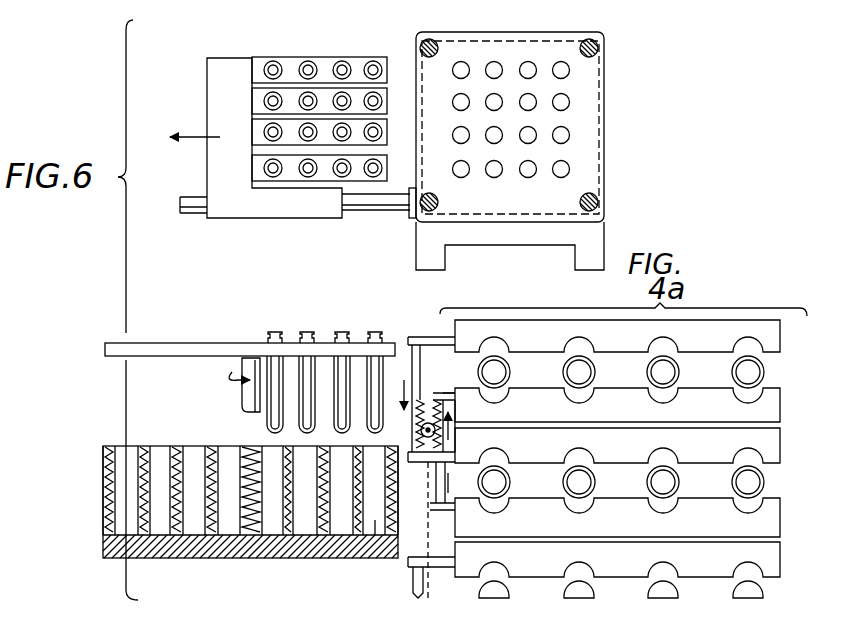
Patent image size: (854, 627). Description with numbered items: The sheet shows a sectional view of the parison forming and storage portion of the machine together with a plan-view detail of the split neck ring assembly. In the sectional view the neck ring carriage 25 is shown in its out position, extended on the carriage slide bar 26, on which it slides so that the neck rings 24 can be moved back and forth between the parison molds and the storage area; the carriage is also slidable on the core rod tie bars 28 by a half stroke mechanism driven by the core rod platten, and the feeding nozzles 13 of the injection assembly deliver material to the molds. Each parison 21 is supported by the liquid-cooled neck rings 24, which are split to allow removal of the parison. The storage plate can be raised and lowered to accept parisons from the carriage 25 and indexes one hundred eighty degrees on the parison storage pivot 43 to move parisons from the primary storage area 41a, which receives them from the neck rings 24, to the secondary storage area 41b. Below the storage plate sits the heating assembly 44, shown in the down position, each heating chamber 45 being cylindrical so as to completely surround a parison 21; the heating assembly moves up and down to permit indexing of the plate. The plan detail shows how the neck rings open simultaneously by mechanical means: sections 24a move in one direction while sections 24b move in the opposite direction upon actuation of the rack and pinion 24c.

In FIG. 6, the feeding nozzles 13 is at (564, 102).
In FIG. 6, the parison 21 is at (270, 422).
In FIG. 4a, the parison 21 is at (742, 364).
In FIG. 6, the neck rings 24 is at (366, 60).
In FIG. 4a, the neck rings 24 is at (755, 289).
In FIG. 4a, the neck ring sections 24a is at (780, 338).
In FIG. 4a, the neck ring sections 24b is at (781, 400).
In FIG. 4a, the rack and pinion 24c is at (462, 413).
In FIG. 6, the neck ring carriage 25 is at (207, 168).
In FIG. 6, the carriage slide bar 26 is at (383, 212).
In FIG. 6, the core rod tie bars 28 is at (596, 50).
In FIG. 6, the primary storage area 41a is at (393, 343).
In FIG. 6, the secondary storage area 41b is at (105, 348).
In FIG. 6, the parison storage pivot 43 is at (252, 358).
In FIG. 6, the heating assembly 44 is at (345, 562).
In FIG. 6, the heating chamber 45 is at (375, 522).